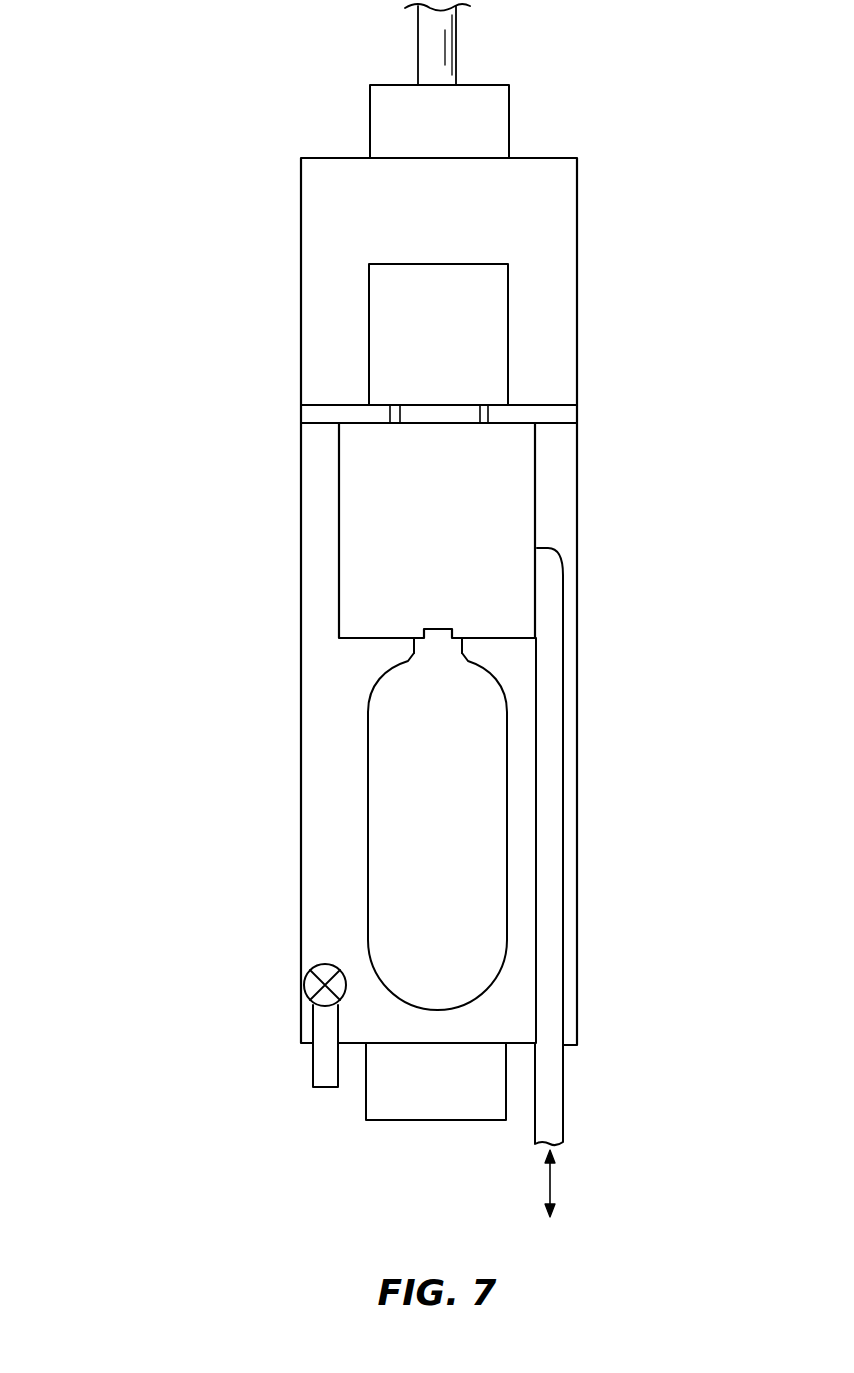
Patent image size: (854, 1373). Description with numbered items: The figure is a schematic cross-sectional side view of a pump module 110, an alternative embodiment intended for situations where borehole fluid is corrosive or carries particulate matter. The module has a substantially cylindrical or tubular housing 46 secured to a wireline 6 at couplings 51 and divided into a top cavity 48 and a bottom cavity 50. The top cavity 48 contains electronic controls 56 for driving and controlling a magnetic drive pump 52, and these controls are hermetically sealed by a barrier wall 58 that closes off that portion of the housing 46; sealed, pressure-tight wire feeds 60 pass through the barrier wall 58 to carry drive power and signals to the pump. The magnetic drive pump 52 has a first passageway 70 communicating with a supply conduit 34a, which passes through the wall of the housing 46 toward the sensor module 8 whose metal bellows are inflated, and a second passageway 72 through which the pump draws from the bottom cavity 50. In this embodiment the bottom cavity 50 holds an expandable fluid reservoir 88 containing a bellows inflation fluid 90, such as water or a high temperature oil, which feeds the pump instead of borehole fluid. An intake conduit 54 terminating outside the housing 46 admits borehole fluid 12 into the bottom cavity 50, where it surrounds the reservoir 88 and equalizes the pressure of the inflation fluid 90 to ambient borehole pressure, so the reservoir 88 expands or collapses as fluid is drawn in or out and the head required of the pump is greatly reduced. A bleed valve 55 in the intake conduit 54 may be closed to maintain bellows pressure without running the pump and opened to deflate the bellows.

The pump module 110 is at (195, 223).
The wireline 6 is at (417, 47).
The couplings 51 is at (370, 118).
The top cavity 48 is at (315, 367).
The bottom cavity 50 is at (322, 852).
The housing 46 is at (577, 1020).
The borehole fluid 12 is at (340, 914).
The electronic controls 56 is at (493, 339).
The barrier wall 58 is at (572, 415).
The wire feeds 60 is at (387, 413).
The magnetic drive pump 52 is at (500, 512).
The first passageway 70 is at (550, 589).
The supply conduit 34a is at (563, 1090).
The second passageway 72 is at (438, 635).
The expandable fluid reservoir 88 is at (482, 733).
The bellows inflation fluid 90 is at (427, 834).
The bleed valve 55 is at (304, 985).
The intake conduit 54 is at (313, 1063).
The sensor module 8 is at (549, 1199).